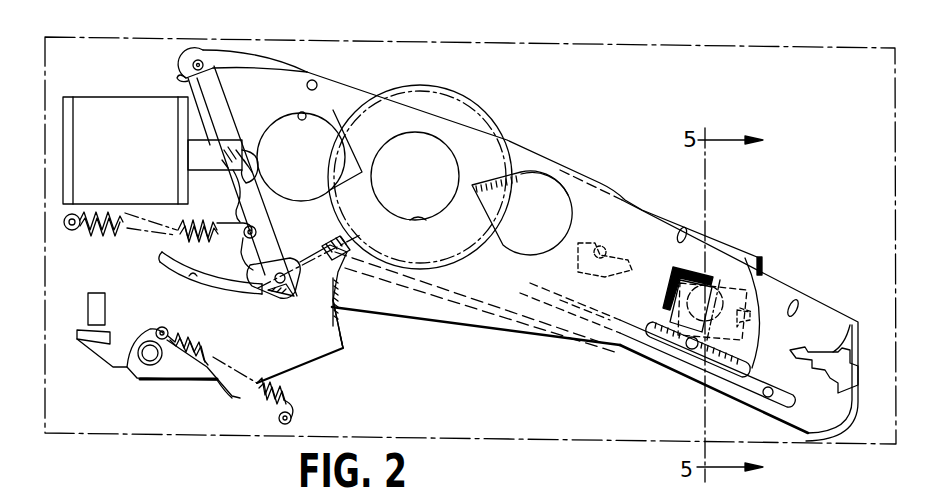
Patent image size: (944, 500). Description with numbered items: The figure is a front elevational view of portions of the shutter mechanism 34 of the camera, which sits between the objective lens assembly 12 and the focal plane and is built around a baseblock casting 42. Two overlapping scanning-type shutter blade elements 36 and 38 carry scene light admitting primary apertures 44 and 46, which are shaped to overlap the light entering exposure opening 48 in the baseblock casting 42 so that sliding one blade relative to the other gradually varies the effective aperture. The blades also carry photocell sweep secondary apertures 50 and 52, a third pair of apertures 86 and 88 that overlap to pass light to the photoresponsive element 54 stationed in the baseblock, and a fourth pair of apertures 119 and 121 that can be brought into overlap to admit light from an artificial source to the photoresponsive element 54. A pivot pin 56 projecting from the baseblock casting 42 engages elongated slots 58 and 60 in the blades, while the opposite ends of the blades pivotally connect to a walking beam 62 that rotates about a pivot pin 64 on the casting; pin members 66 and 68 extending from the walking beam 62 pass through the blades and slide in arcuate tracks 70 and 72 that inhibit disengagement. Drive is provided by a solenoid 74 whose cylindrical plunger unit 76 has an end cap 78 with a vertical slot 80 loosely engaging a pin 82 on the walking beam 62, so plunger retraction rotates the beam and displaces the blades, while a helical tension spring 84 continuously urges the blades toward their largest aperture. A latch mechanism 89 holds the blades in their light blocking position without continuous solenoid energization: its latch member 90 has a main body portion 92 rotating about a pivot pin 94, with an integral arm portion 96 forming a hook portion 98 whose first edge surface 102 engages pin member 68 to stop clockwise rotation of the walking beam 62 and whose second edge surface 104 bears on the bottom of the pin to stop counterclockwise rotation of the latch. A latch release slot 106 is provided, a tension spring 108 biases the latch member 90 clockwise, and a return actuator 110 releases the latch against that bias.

The objective lens assembly 12 is at (447, 85).
The shutter mechanism 34 is at (607, 86).
The shutter blade element 36 is at (330, 80).
The shutter blade element 38 is at (468, 322).
The baseblock casting 42 is at (803, 178).
The primary aperture 44 is at (302, 112).
The primary aperture 46 is at (514, 247).
The light entering exposure opening 48 is at (421, 222).
The photocell sweep secondary aperture 50 is at (607, 257).
The photocell sweep secondary aperture 52 is at (846, 330).
The photoresponsive element 54 is at (758, 258).
The pivot pin 56 is at (688, 348).
The elongated slot 58 is at (597, 322).
The elongated slot 60 is at (767, 395).
The walking beam 62 is at (236, 110).
The pivot pin 64 is at (242, 220).
The pin member 66 is at (203, 60).
The pin member 68 is at (272, 297).
The arcuate track 70 is at (277, 60).
The arcuate track 72 is at (193, 278).
The solenoid 74 is at (101, 93).
The plunger unit 76 is at (223, 176).
The end cap 78 is at (212, 134).
The slot 80 is at (204, 221).
The pin 82 is at (229, 140).
The helical tension spring 84 is at (110, 236).
The third aperture 86 is at (738, 317).
The third aperture 88 is at (668, 293).
The latch mechanism 89 is at (332, 357).
The latch member 90 is at (296, 372).
The main body portion 92 is at (242, 333).
The pivot pin 94 is at (137, 368).
The arm portion 96 is at (343, 298).
The hook portion 98 is at (250, 272).
The first edge surface 102 is at (290, 253).
The second edge surface 104 is at (297, 295).
The latch release slot 106 is at (337, 273).
The tension spring 108 is at (248, 405).
The return actuator 110 is at (105, 312).
The fourth aperture 119 is at (679, 226).
The fourth aperture 121 is at (787, 300).